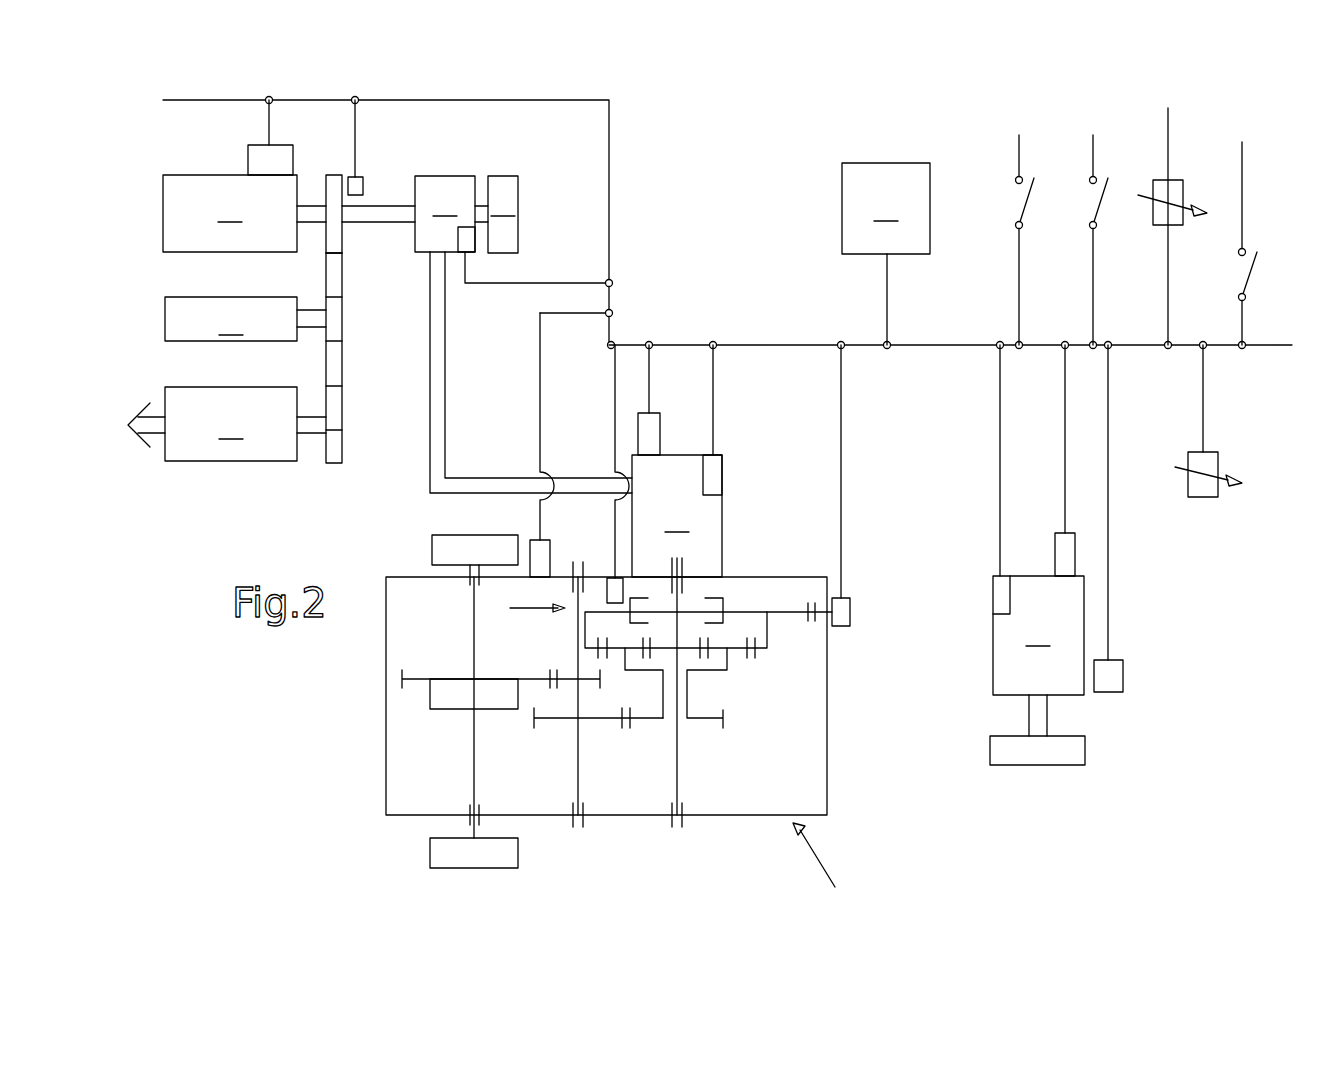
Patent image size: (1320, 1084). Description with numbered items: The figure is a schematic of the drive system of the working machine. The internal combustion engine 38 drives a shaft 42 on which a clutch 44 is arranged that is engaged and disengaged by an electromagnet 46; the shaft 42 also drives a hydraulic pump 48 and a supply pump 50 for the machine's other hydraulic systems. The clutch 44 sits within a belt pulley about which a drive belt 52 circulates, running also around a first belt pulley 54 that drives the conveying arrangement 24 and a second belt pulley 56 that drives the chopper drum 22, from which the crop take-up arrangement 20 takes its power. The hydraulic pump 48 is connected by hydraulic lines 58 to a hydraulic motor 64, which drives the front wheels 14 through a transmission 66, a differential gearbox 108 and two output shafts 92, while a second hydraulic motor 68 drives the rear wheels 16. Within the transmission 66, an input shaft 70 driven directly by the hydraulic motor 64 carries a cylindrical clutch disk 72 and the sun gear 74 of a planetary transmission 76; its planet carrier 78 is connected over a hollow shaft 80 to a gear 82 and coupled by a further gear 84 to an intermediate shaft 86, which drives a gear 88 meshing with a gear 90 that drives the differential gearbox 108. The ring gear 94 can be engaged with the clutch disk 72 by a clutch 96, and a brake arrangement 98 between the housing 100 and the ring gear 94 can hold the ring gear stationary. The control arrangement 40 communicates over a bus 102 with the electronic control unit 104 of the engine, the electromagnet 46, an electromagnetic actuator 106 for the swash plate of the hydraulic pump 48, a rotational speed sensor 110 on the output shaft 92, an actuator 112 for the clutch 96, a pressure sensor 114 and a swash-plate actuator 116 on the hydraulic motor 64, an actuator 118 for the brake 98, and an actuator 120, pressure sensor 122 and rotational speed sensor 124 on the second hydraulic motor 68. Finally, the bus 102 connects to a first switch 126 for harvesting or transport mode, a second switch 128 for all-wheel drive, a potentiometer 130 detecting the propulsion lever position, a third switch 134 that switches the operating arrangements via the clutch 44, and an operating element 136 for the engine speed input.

The front wheels 14 is at (474, 703).
The rear wheels 16 is at (1037, 732).
The harvested crop take-up arrangement 20 is at (113, 428).
The chopper drum 22 is at (231, 424).
The conveying arrangement 24 is at (231, 319).
The internal combustion engine 38 is at (230, 213).
The control arrangement 40 is at (886, 254).
The shaft 42 is at (310, 205).
The clutch 44 is at (343, 233).
The electromagnet 46 is at (363, 183).
The hydraulic pump 48 is at (445, 214).
The supply pump 50 is at (502, 214).
The drive belt 52 is at (326, 273).
The first belt pulley 54 is at (342, 318).
The second belt pulley 56 is at (342, 447).
The hydraulic lines 58 is at (430, 308).
The hydraulic motor 64 is at (677, 516).
The transmission 66 is at (826, 870).
The second hydraulic motor 68 is at (1038, 635).
The input shaft 70 is at (682, 800).
The cylindrical clutch disk 72 is at (690, 605).
The sun gear 74 is at (695, 672).
The planetary transmission 76 is at (520, 608).
The planet carrier 78 is at (728, 666).
The hollow shaft 80 is at (663, 697).
The gear 82 is at (643, 723).
The further gear 84 is at (550, 722).
The intermediate shaft 86 is at (578, 770).
The gear 88 is at (567, 676).
The gear 90 is at (415, 681).
The output shafts 92 is at (473, 632).
The ring gear 94 is at (760, 655).
The clutch 96 is at (628, 620).
The brake arrangement 98 is at (808, 603).
The housing 100 is at (827, 763).
The bus 102 is at (930, 345).
The electronic control unit 104 is at (270, 163).
The electromagnetic actuator 106 is at (470, 248).
The differential gearbox 108 is at (438, 690).
The rotational speed sensor 110 is at (540, 540).
The electromagnetic actuator 112 is at (612, 582).
The pressure sensor 114 is at (660, 432).
The electromagnetic actuator 116 is at (722, 478).
The electromagnetic actuator 118 is at (850, 605).
The electromagnetic actuator 120 is at (995, 594).
The pressure sensor 122 is at (1058, 555).
The rotational speed sensor 124 is at (1123, 675).
The first switch 126 is at (1010, 200).
The second switch 128 is at (1088, 200).
The potentiometer 130 is at (1183, 182).
The third switch 134 is at (1250, 272).
The operating element 136 is at (1185, 480).